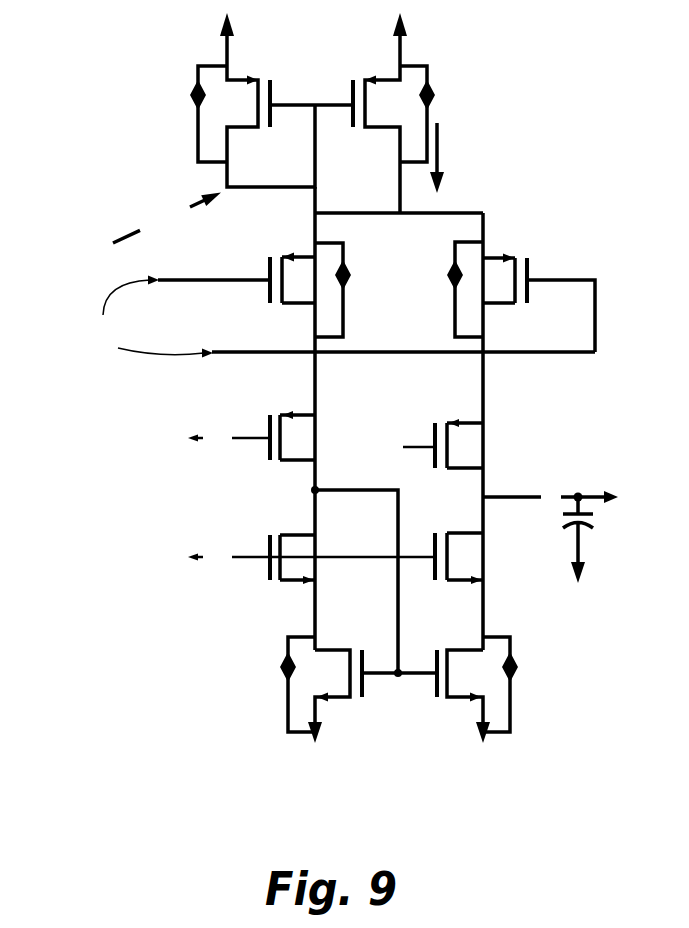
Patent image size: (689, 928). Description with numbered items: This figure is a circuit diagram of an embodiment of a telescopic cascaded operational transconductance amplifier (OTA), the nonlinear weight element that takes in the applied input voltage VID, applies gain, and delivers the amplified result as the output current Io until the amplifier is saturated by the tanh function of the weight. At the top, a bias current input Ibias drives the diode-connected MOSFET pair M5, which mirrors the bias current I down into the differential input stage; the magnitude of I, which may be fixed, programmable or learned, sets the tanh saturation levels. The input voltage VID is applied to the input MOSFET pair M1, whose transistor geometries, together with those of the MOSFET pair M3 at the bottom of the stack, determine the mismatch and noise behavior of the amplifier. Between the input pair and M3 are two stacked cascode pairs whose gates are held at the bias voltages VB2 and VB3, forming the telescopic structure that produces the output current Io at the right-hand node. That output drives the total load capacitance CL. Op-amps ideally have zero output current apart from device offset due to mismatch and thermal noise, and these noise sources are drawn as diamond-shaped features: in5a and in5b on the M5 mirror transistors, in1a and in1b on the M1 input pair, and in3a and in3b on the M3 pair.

The MOSFET M5 is at (313, 113).
The noise source in5a is at (190, 114).
The noise source in5b is at (434, 114).
The bias current input Ibias is at (167, 218).
The bias current I is at (447, 158).
The MOSFET M1 is at (376, 303).
The noise source in1a is at (344, 290).
The noise source in1b is at (450, 289).
The applied input voltage VID is at (150, 317).
The bias voltage VB2 is at (335, 439).
The bias voltage VB3 is at (335, 558).
The output current Io is at (550, 498).
The total load capacitance CL is at (595, 540).
The MOSFET M3 is at (399, 706).
The noise source in3a is at (286, 684).
The noise source in3b is at (512, 684).